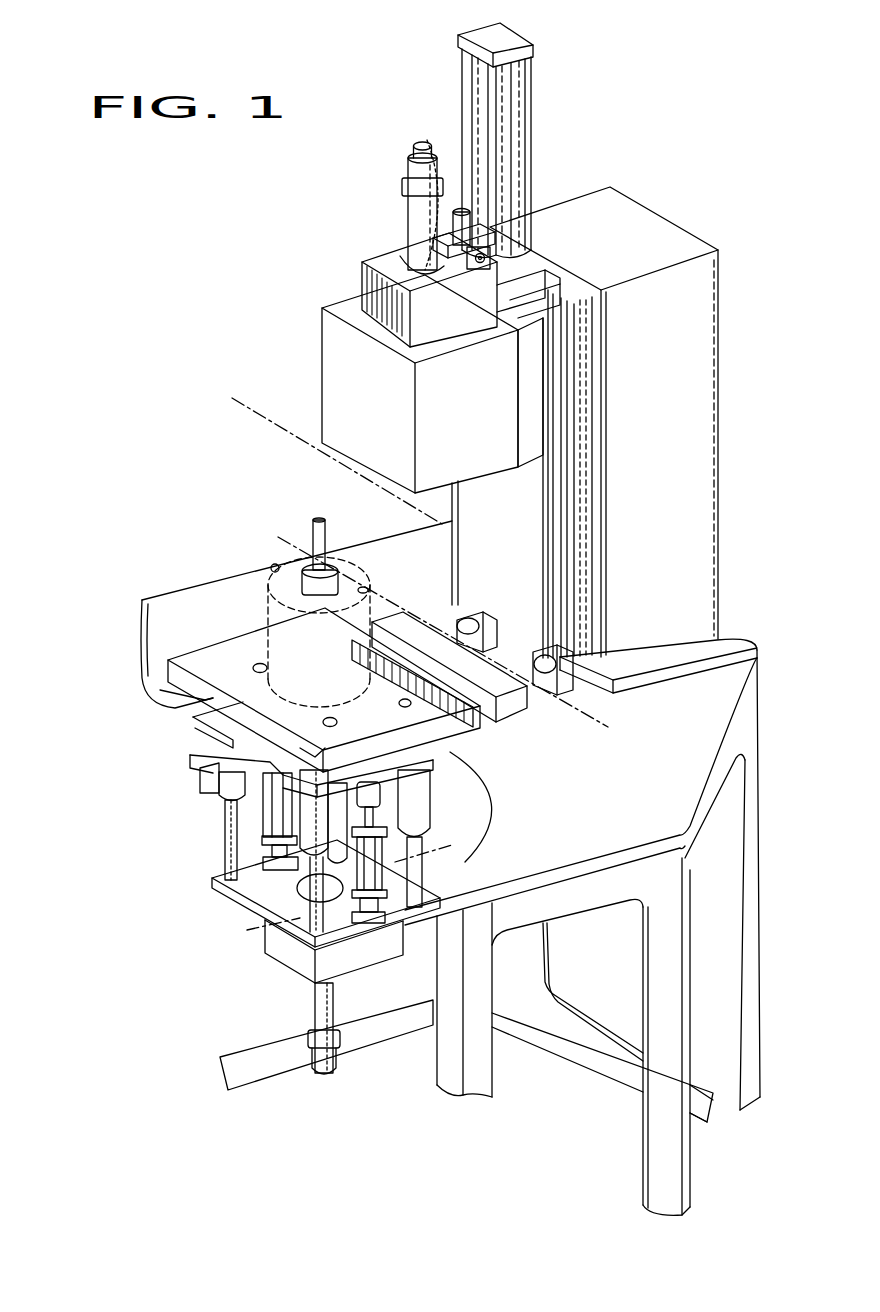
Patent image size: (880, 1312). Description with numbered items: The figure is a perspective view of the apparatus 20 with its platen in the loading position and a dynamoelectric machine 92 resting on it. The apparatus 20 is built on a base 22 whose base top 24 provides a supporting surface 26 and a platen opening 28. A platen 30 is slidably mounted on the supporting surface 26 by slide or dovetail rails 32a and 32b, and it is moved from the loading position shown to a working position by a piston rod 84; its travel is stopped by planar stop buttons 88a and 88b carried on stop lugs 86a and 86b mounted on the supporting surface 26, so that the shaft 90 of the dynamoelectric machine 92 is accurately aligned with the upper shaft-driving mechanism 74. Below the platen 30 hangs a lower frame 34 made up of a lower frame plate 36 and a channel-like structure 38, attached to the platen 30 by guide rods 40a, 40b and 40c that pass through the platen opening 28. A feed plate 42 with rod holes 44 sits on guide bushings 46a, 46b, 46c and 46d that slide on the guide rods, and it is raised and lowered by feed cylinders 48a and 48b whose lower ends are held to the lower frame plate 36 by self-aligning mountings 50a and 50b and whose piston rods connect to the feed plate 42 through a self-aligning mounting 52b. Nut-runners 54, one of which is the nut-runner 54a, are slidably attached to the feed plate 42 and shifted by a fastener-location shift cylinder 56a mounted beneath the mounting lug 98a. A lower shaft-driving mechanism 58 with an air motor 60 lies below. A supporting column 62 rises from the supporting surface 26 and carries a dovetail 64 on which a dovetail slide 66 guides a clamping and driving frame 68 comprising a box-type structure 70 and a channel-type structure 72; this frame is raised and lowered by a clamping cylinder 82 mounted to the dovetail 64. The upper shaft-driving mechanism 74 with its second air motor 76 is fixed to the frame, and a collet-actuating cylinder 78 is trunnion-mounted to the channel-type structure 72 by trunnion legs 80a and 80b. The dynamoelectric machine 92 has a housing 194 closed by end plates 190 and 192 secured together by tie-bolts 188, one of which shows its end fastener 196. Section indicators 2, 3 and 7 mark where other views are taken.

The section line 2- 2 is at (270, 520).
The section line 3- 3 is at (470, 843).
The section line 7- 7 is at (228, 395).
The apparatus 20 is at (148, 580).
The base 22 is at (592, 905).
The base top 24 is at (603, 866).
The supporting surface 26 is at (562, 882).
The platen opening 28 is at (450, 680).
The platen 30 is at (168, 658).
The slide or dovetail rail 32a is at (170, 694).
The slide or dovetail rail 32b is at (306, 750).
The lower frame 34 is at (235, 925).
The lower frame plate 36 is at (467, 1000).
The channel-like structure 38 is at (300, 975).
The guide rod 40a is at (292, 866).
The guide rod 40b is at (218, 957).
The guide rod 40c is at (470, 855).
The feed plate 42 is at (480, 742).
The rod hole 44 is at (195, 722).
The guide bushing 46a is at (224, 820).
The guide bushing 46b is at (298, 885).
The guide bushing 46c is at (337, 823).
The guide bushing 46d is at (425, 820).
The feed cylinder 48a is at (270, 810).
The feed cylinder 48b is at (370, 922).
The self-aligning mounting 50a is at (315, 835).
The self-aligning mounting 50b is at (372, 920).
The self-aligning mounting 52b is at (430, 795).
The nut-runner 54 is at (360, 820).
The nut-runner 54a is at (282, 850).
The fastener-location shift cylinder 56a is at (219, 780).
The lower shaft-driving mechanism 58 is at (310, 1012).
The air motor 60 is at (332, 1068).
The supporting column 62 is at (632, 422).
The dovetail 64 is at (560, 300).
The dovetail slide 66 is at (528, 400).
The clamping and driving frame 68 is at (305, 305).
The box-type structure 70 is at (330, 355).
The channel-type structure 72 is at (397, 290).
The upper shaft-driving mechanism 74 is at (380, 188).
The second air motor 76 is at (408, 233).
The collet-actuating cylinder 78 is at (473, 222).
The trunnion leg 80a is at (440, 190).
The trunnion leg 80b is at (470, 266).
The clamping cylinder 82 is at (512, 110).
The piston rod 84 is at (449, 667).
The stop lug 86a is at (487, 606).
The stop lug 86b is at (590, 648).
The planar stop button 88a is at (462, 613).
The planar stop button 88b is at (555, 640).
The rotor shaft 90 is at (314, 530).
The dynamoelectric machine 92 is at (298, 588).
The mounting lug 98a is at (200, 770).
The tie-bolt 188 is at (270, 568).
The end plate 190 is at (308, 702).
The end plate 192 is at (366, 590).
The housing 194 is at (278, 631).
The bolt 196 is at (272, 566).